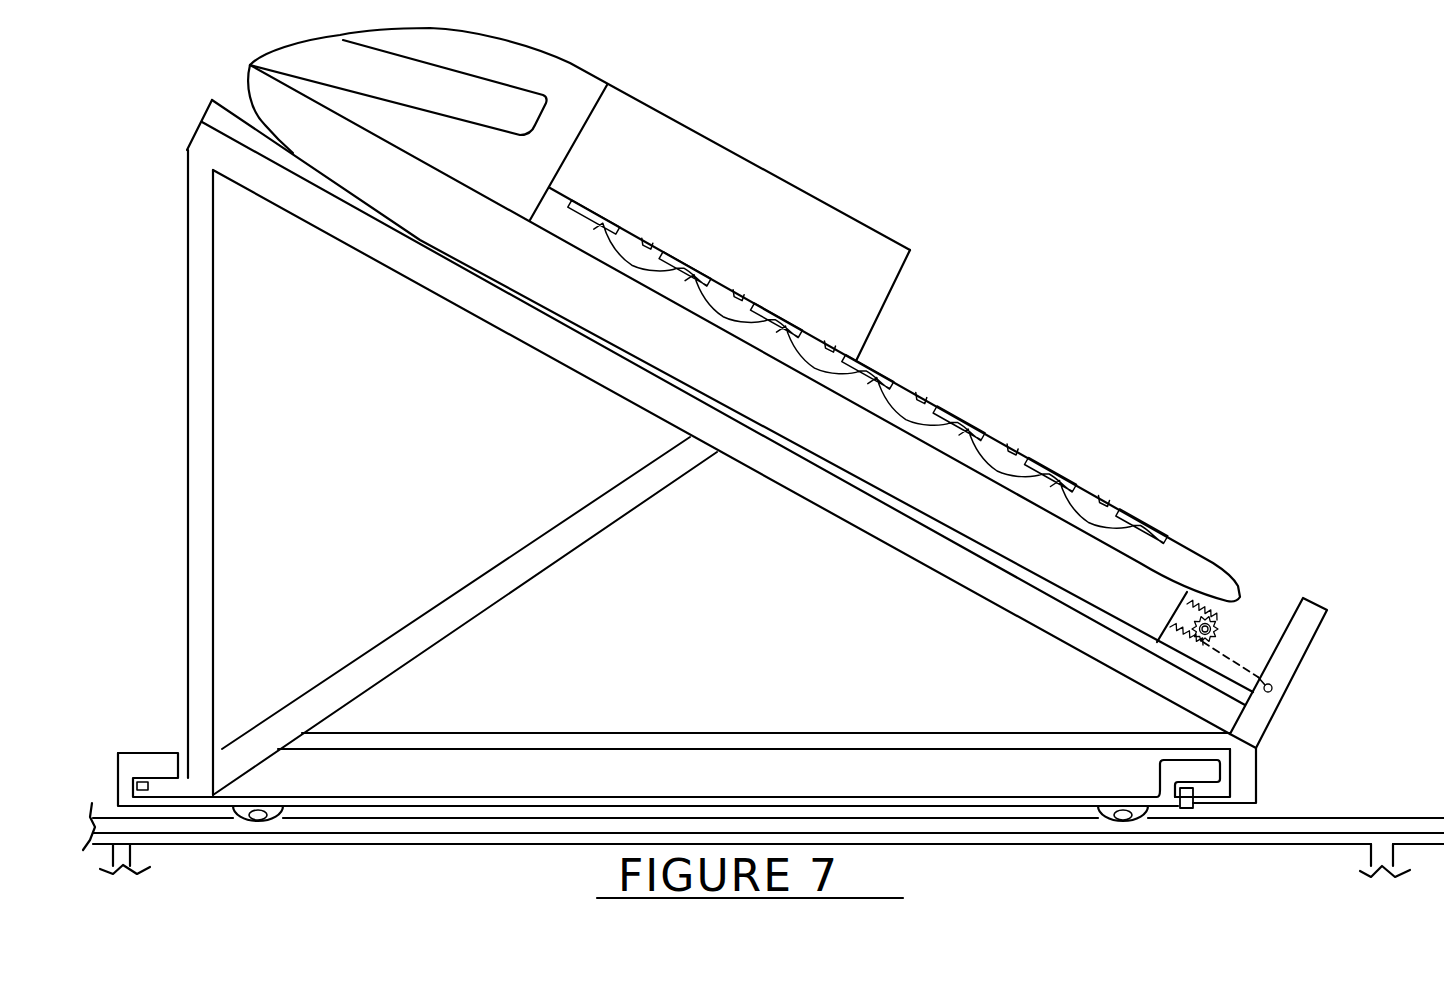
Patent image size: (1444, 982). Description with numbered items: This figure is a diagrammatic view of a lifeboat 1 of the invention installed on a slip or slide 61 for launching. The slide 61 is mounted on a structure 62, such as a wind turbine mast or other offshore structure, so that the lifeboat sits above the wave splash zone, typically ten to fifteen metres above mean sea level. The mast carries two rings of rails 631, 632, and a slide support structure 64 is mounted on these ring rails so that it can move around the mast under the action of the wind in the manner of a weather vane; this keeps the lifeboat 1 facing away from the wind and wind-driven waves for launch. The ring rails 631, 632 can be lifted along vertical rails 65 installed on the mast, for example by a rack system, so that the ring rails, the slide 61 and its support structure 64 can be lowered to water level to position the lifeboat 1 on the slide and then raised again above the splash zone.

The vehicle (boat) 1 is at (990, 187).
The slide 61 is at (240, 161).
The structure 62 is at (1337, 867).
The slide support structure 64 is at (197, 424).
The vertical rails 65 is at (109, 822).
The ring of rails 631 is at (1183, 770).
The ring of rails 632 is at (160, 763).